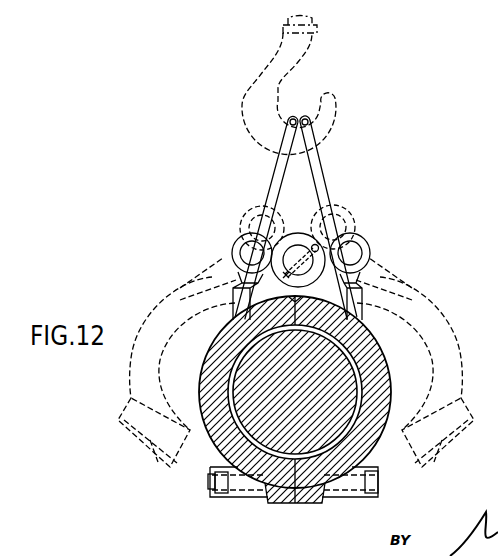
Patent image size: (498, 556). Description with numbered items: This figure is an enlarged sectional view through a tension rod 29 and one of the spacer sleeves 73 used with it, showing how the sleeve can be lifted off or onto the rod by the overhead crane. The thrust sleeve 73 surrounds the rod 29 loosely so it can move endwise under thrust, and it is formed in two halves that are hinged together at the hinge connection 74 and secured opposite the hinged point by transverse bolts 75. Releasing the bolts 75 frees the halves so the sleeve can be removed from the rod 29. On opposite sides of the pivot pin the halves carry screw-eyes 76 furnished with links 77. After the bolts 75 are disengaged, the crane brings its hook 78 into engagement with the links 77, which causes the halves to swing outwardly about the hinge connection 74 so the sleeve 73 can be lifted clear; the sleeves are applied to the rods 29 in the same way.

The tension rod 29 is at (350, 387).
The spacer sleeve 73 is at (385, 350).
The hinge 74 is at (297, 250).
The transverse bolt 75 is at (215, 490).
The screw-eye 76 is at (376, 243).
The link 77 is at (327, 175).
The hook 78 is at (246, 125).